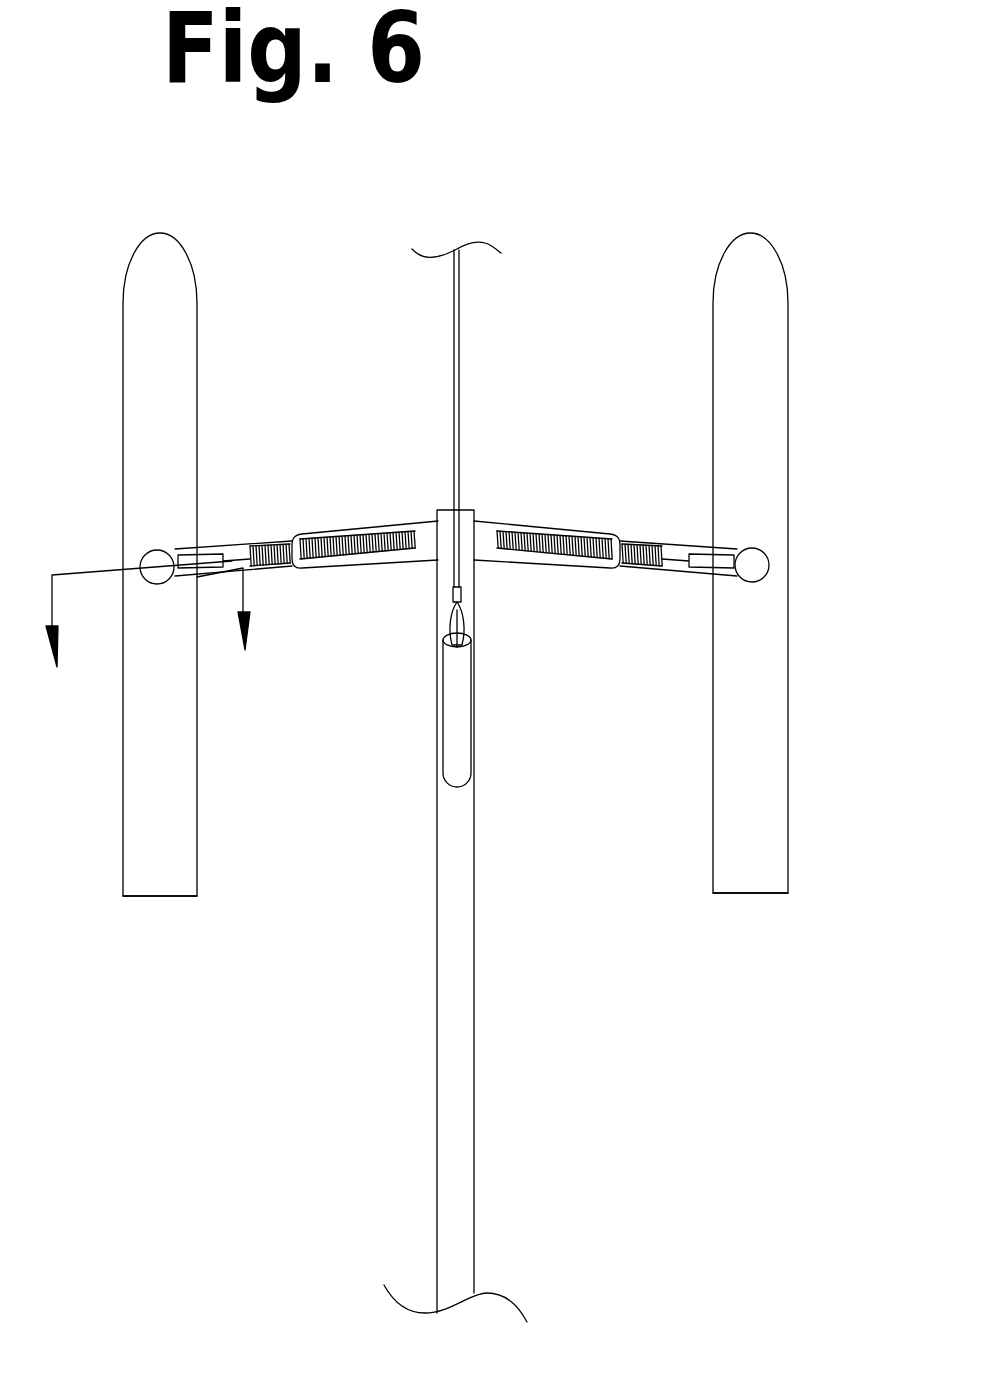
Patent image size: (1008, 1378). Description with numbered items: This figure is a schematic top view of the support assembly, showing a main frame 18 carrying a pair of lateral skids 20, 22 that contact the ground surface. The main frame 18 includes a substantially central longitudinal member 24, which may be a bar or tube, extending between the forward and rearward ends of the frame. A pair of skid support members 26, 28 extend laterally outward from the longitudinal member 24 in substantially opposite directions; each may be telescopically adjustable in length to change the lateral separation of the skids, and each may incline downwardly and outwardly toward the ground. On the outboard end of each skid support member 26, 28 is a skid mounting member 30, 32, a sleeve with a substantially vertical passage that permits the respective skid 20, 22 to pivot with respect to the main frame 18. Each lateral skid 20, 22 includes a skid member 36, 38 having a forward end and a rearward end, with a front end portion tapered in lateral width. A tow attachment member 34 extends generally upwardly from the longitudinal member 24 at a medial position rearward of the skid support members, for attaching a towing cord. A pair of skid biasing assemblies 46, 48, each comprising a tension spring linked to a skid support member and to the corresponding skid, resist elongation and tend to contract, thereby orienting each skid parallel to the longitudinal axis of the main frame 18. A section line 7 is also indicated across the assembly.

The section line 7- 7 is at (156, 640).
The main frame 18 is at (473, 466).
The lateral skid 20 is at (810, 461).
The lateral skid 22 is at (99, 508).
The central longitudinal member 24 is at (460, 1040).
The skid support member 26 is at (678, 540).
The skid support member 28 is at (230, 535).
The skid mounting member 30 is at (770, 564).
The skid mounting member 32 is at (157, 585).
The tow attachment member 34 is at (458, 697).
The skid member 36 is at (752, 830).
The skid member 38 is at (172, 852).
The skid biasing assembly 46 is at (593, 597).
The skid biasing assembly 48 is at (331, 614).